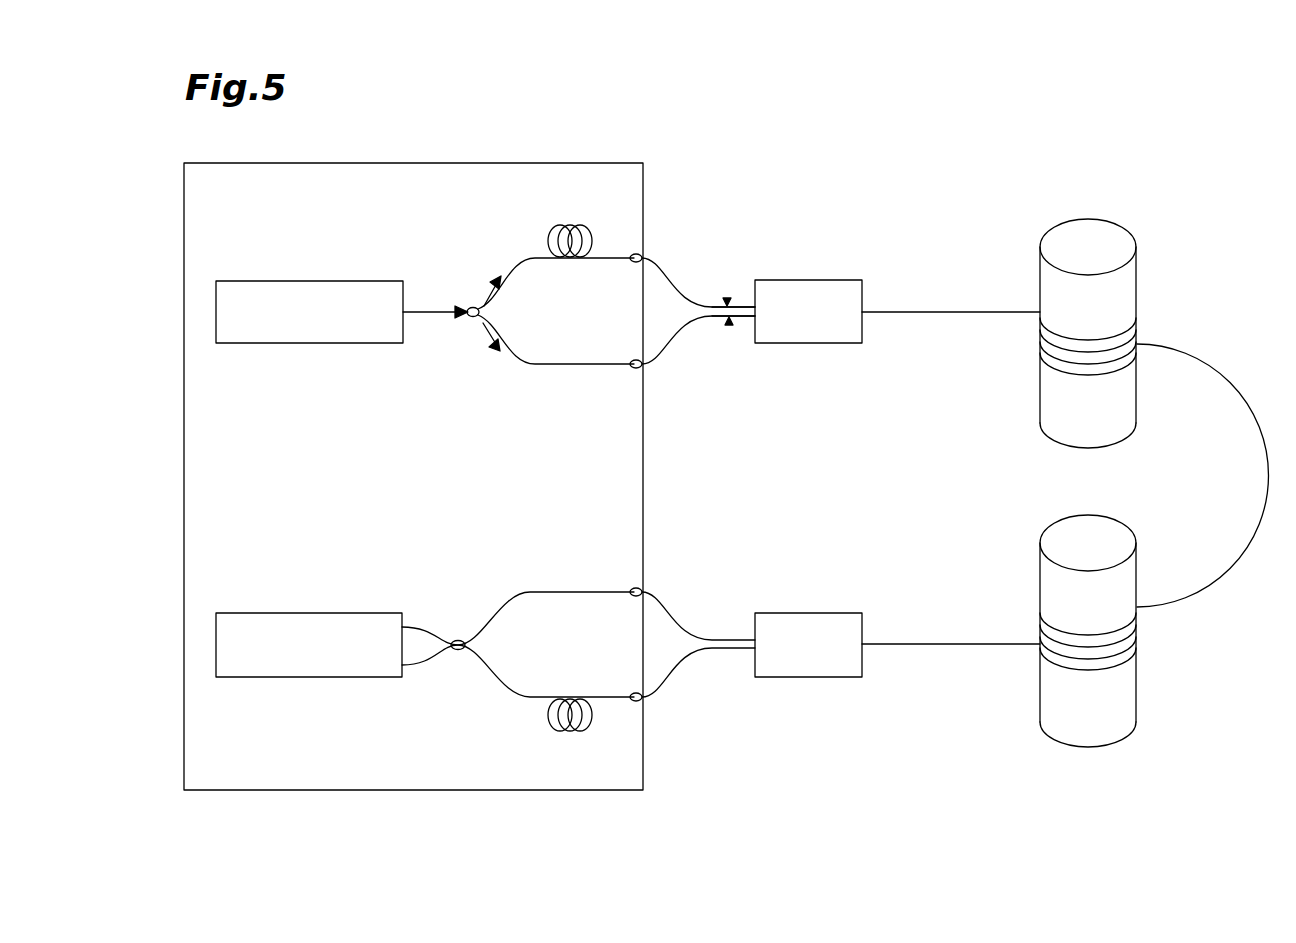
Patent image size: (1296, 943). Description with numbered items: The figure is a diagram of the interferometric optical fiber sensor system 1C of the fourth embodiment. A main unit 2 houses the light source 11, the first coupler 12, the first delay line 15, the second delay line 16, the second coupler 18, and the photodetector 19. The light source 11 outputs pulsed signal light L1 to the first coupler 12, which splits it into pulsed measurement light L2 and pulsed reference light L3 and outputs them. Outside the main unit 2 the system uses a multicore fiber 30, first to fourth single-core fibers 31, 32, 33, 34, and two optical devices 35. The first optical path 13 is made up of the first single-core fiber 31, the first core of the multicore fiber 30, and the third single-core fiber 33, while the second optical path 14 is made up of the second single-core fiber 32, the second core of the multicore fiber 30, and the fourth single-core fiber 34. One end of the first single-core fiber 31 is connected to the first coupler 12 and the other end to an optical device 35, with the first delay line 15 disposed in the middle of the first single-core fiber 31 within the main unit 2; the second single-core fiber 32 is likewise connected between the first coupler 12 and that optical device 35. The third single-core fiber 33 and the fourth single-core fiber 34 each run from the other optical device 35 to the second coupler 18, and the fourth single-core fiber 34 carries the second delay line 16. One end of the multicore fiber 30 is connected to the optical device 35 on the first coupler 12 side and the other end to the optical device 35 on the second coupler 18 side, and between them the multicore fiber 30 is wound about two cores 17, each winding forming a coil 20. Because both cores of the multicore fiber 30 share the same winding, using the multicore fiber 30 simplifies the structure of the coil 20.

The interferometric optical fiber sensor system 1C is at (1022, 143).
The main unit 2 is at (522, 161).
The light source 11 is at (316, 280).
The first coupler 12 is at (466, 306).
The first optical path 13 is at (728, 298).
The second optical path 14 is at (729, 326).
The first delay line 15 is at (571, 224).
The second delay line 16 is at (571, 732).
The core 17 is at (1110, 232).
The second coupler 18 is at (458, 639).
The photodetector 19 is at (316, 612).
The coil 20 is at (1141, 269).
The multicore fiber 30 is at (955, 311).
The first single-core fiber 31 is at (684, 280).
The second single-core fiber 32 is at (685, 346).
The third single-core fiber 33 is at (684, 613).
The fourth single-core fiber 34 is at (683, 678).
The optical device 35 is at (812, 279).
The signal light L1 is at (435, 301).
The measurement light L2 is at (481, 300).
The reference light L3 is at (481, 336).